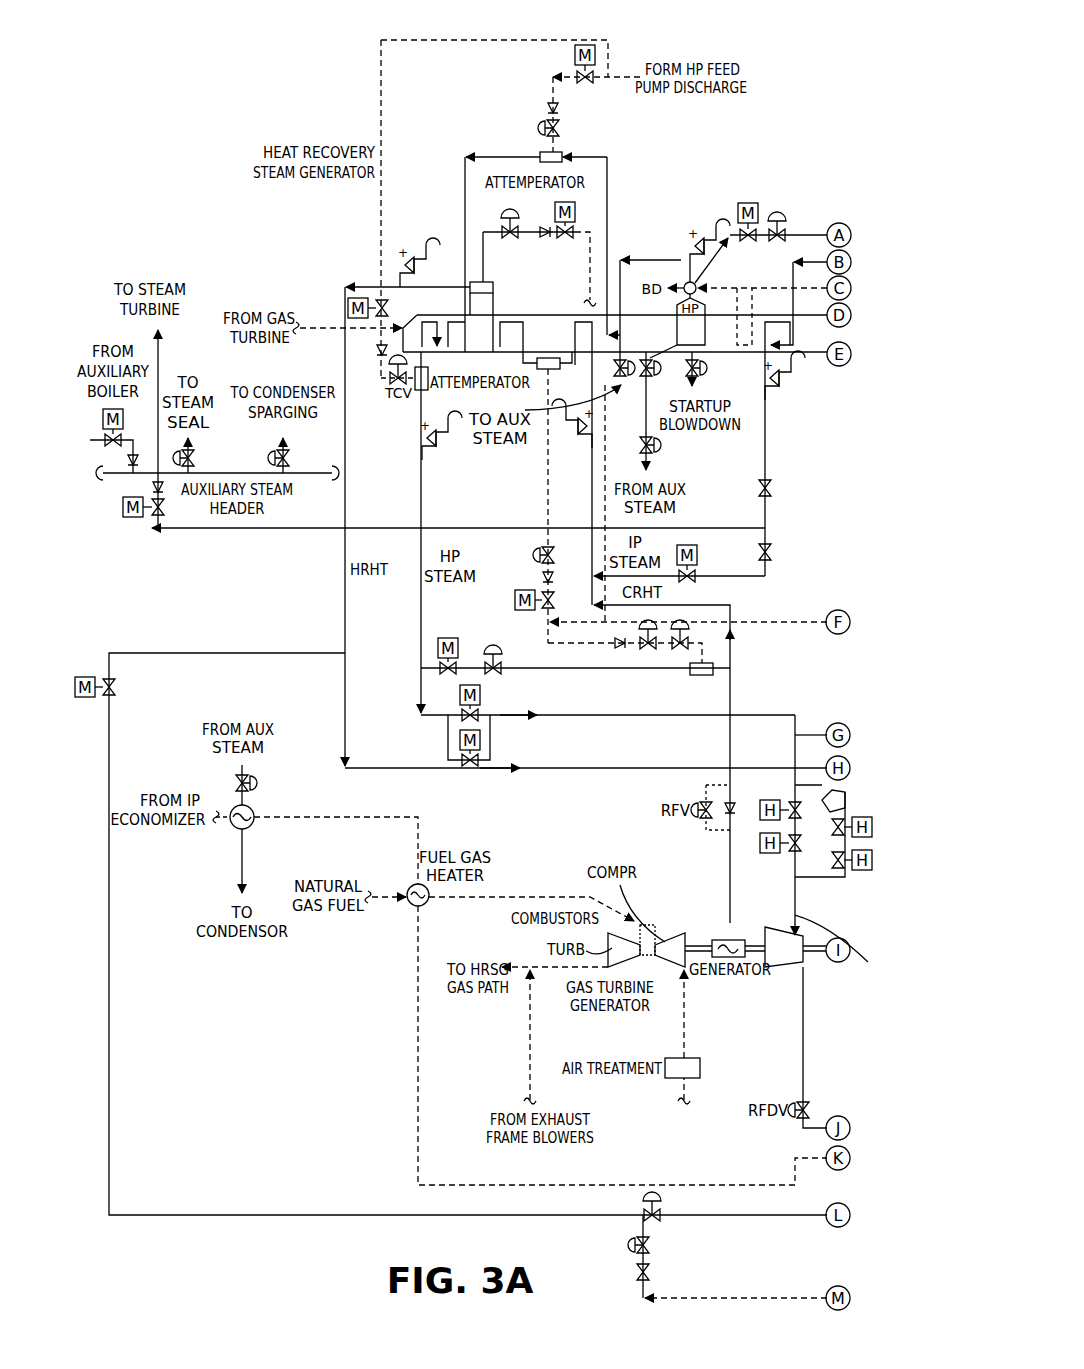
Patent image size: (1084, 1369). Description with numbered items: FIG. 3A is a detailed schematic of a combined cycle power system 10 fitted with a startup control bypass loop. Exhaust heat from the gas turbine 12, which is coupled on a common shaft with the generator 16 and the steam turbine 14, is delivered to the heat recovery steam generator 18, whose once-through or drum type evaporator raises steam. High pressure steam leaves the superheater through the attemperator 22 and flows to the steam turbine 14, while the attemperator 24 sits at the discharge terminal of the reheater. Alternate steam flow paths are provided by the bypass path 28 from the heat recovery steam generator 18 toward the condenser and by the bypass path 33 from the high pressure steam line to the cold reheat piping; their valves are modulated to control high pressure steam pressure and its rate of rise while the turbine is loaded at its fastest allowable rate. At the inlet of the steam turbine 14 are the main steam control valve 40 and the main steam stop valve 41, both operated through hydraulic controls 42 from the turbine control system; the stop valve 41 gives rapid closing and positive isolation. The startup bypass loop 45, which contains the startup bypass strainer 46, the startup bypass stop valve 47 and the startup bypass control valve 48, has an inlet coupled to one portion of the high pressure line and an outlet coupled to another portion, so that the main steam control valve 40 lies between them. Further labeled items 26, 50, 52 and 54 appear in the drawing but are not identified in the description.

The combined cycle power system 10 is at (190, 215).
The gas turbine 12 is at (672, 926).
The steam turbine 14 is at (782, 962).
The generator 16 is at (718, 940).
The heat recovery steam generator 18 is at (418, 320).
The attemperator 22 is at (557, 153).
The attemperator 24 is at (478, 280).
The steam turbine bypass system 26 is at (300, 994).
The bypass path 28 is at (109, 1150).
The bypass path 33 is at (637, 669).
The main steam control valve 40 is at (795, 800).
The main steam stop valve 41 is at (800, 848).
The hydraulic controls 42 is at (758, 845).
The startup bypass loop 45 is at (849, 856).
The startup bypass strainer 46 is at (840, 794).
The startup bypass stop valve 47 is at (845, 824).
The startup bypass control valve 48 is at (846, 866).
The heat exchanger 50 is at (234, 810).
The heated water line 52 is at (300, 820).
The fuel gas heater return line 54 is at (418, 1032).